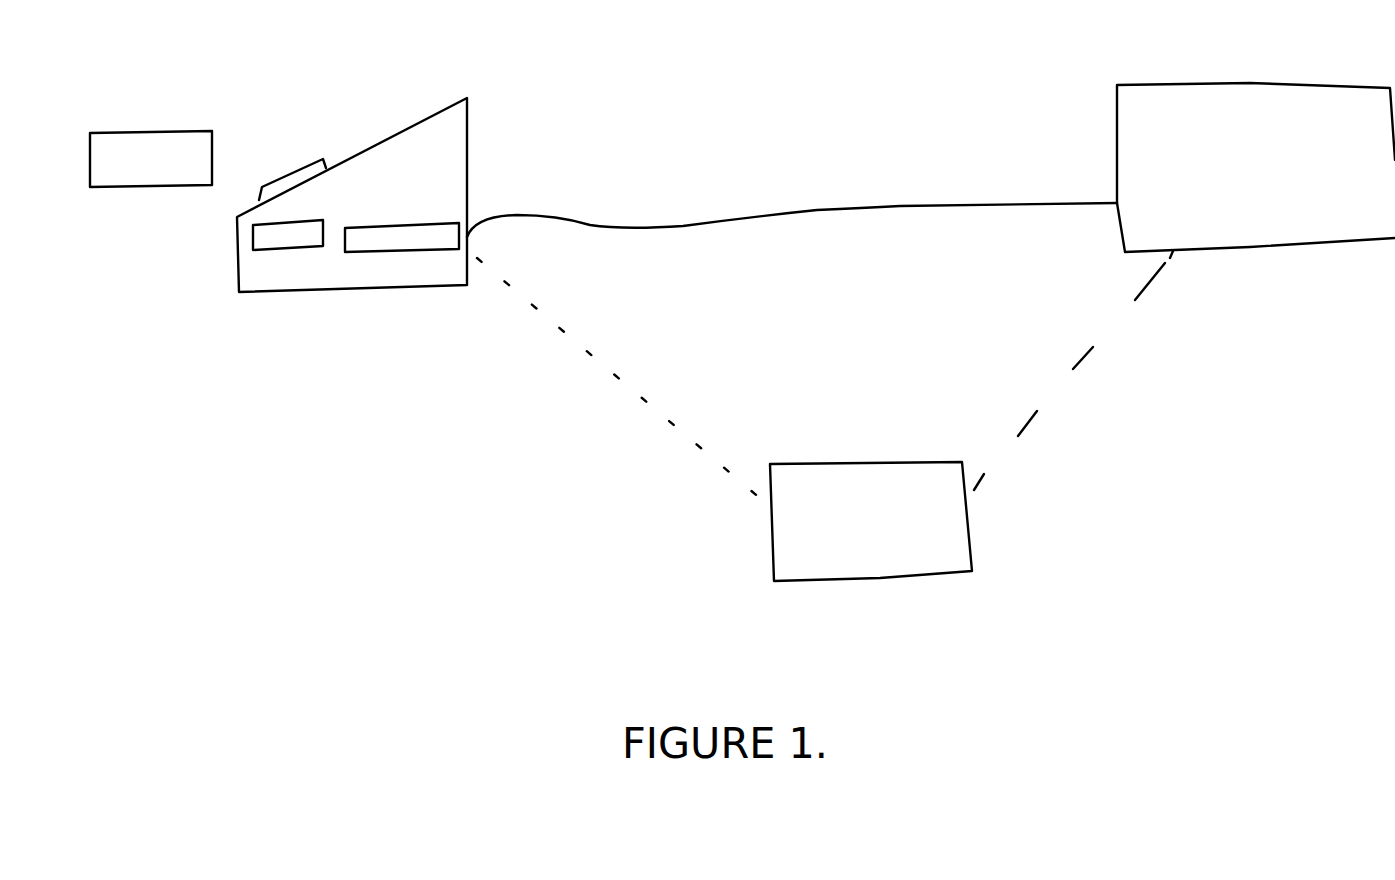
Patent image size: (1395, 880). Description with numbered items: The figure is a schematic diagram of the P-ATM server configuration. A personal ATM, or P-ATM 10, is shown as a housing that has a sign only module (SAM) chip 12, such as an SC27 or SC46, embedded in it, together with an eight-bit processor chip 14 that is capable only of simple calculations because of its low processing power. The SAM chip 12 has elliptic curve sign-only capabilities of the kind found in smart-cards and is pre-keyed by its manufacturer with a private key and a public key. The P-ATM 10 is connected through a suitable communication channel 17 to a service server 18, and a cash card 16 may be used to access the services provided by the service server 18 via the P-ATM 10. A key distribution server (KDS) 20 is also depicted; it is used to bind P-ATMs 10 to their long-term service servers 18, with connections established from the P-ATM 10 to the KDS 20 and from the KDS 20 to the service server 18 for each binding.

The personal ATM (P-ATM) 10 is at (283, 278).
The sign only module (SAM) chip 12 is at (402, 242).
The 8-bit processor chip 14 is at (263, 238).
The cash card 16 is at (145, 160).
The communication channel 17 is at (863, 217).
The service server 18 is at (1310, 226).
The key distribution server (KDS) 20 is at (895, 559).